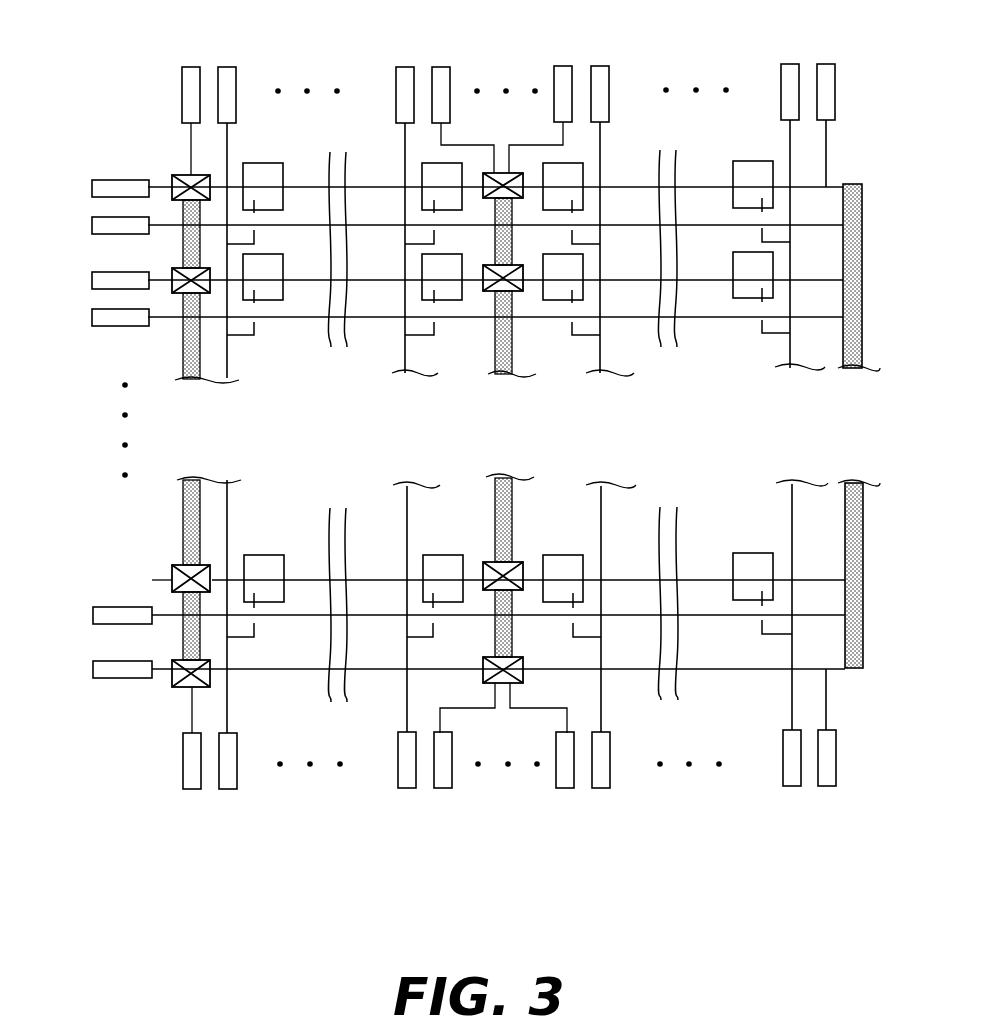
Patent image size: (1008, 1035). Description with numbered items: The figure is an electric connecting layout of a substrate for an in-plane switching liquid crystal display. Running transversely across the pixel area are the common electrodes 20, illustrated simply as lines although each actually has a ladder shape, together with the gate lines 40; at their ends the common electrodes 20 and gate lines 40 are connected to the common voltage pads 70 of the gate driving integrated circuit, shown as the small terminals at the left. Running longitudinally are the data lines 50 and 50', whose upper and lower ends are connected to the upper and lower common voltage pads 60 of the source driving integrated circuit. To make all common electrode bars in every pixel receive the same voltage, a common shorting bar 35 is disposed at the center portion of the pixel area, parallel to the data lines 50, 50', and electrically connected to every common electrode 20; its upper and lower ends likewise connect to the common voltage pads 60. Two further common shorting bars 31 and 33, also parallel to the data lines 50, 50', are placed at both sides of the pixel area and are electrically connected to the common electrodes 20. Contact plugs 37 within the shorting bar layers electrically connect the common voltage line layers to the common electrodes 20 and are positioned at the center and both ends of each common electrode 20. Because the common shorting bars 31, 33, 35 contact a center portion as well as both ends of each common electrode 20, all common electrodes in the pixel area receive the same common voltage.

The common electrode 20 is at (289, 186).
The common shorting bar 31 is at (182, 356).
The common shorting bar 33 is at (864, 351).
The common shorting bar 35 is at (514, 353).
The contact plug 37 is at (500, 172).
The gate line 40 is at (313, 224).
The data line 50 is at (707, 426).
The data line 50' is at (327, 428).
The common voltage pad 60 is at (227, 67).
The common voltage pad 70 is at (90, 226).